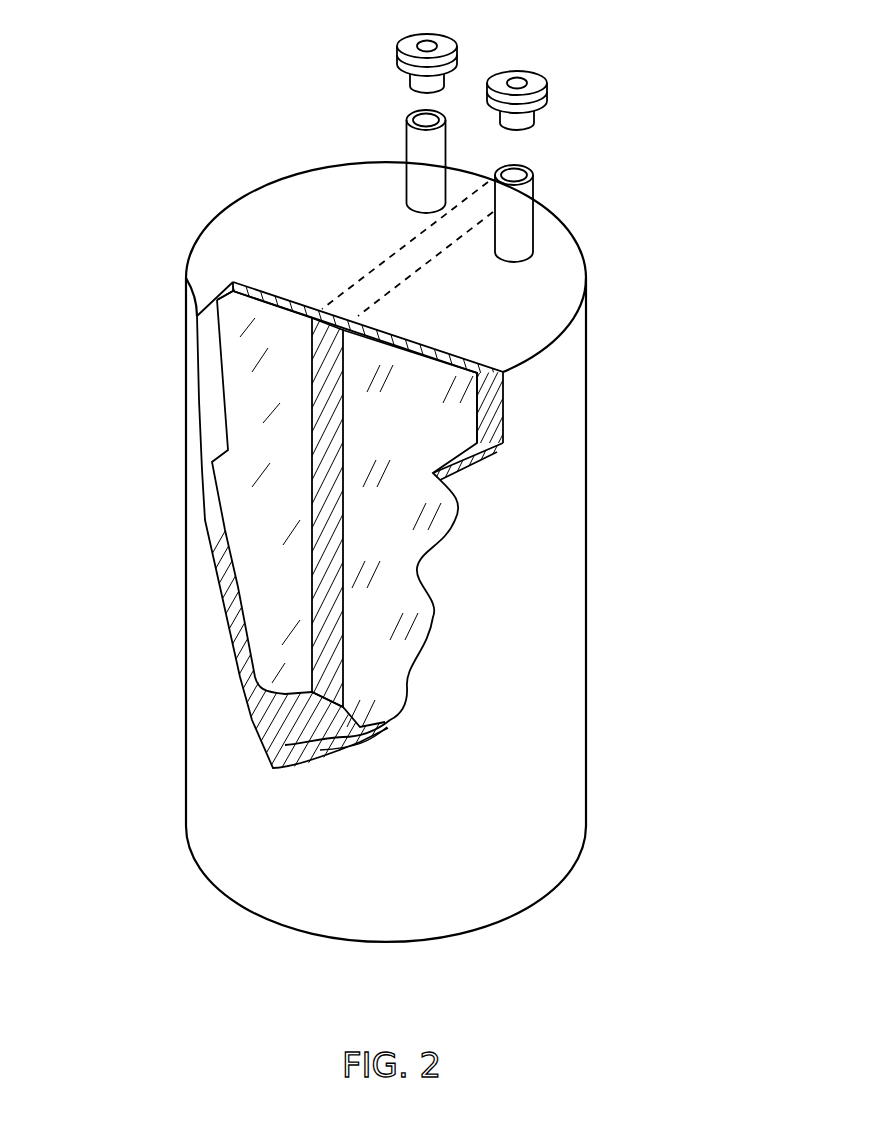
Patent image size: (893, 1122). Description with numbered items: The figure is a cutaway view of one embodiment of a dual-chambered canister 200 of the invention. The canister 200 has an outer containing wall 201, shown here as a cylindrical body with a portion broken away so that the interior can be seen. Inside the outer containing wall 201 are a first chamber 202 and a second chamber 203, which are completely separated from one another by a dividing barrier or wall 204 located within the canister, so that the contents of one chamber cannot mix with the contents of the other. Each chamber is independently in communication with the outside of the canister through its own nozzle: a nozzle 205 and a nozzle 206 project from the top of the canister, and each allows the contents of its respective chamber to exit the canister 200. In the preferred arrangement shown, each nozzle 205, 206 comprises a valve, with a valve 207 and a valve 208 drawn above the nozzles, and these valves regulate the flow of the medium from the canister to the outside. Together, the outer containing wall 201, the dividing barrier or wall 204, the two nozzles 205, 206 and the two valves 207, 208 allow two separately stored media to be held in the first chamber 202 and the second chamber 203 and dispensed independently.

The canister 200 is at (689, 261).
The outer containing wall 201 is at (205, 632).
The first chamber 202 is at (243, 412).
The second chamber 203 is at (505, 434).
The dividing barrier or wall 204 is at (405, 596).
The nozzle 205 is at (527, 192).
The nozzle 206 is at (403, 143).
The valve 207 is at (398, 68).
The valve 208 is at (545, 107).